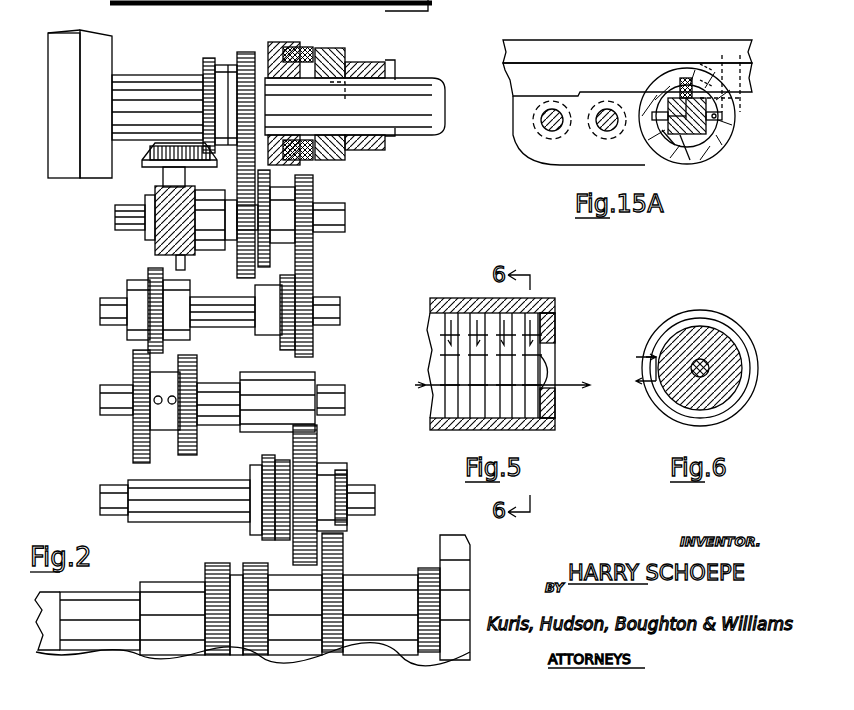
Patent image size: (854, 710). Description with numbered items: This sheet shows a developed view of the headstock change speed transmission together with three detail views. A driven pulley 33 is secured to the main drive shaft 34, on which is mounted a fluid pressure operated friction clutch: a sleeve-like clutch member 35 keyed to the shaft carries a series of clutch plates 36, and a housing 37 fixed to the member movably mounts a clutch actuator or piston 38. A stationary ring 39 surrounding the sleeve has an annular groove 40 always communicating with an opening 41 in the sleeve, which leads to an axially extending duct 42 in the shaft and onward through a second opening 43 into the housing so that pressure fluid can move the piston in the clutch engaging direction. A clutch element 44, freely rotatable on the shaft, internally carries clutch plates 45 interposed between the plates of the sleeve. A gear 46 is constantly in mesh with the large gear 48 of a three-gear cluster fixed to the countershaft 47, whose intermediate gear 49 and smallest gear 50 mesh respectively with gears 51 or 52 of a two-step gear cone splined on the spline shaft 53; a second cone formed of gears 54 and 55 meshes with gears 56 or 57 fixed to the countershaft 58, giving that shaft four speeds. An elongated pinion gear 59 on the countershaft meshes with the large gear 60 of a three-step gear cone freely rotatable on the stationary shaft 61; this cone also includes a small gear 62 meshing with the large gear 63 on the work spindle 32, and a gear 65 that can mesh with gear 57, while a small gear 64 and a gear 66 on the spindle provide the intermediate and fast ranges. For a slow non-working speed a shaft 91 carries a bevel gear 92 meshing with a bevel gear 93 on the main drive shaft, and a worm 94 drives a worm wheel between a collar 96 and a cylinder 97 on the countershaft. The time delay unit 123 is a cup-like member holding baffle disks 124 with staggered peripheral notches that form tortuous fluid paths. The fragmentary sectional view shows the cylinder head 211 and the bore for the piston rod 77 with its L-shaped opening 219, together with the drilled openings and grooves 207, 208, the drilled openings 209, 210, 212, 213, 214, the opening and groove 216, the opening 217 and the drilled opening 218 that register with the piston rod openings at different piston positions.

In FIG. 2, the work spindle 32 is at (380, 590).
In FIG. 2, the pulley 33 is at (98, 62).
In FIG. 2, the main drive shaft 34 is at (130, 82).
In FIG. 2, the sleeve-like clutch member 35 is at (298, 76).
In FIG. 2, the clutch plates 36 is at (300, 48).
In FIG. 2, the housing 37 is at (340, 160).
In FIG. 2, the clutch actuator or piston 38 is at (320, 62).
In FIG. 2, the stationary ring 39 is at (380, 62).
In FIG. 2, the annular groove 40 is at (375, 150).
In FIG. 2, the opening 41 is at (360, 70).
In FIG. 2, the axially extending duct 42 is at (346, 100).
In FIG. 2, the second opening 43 is at (330, 86).
In FIG. 2, the clutch element 44 is at (272, 58).
In FIG. 2, the clutch plates 45 is at (315, 176).
In FIG. 2, the gear 46 is at (247, 52).
In FIG. 2, the countershaft 47 is at (335, 225).
In FIG. 2, the large gear 48 is at (242, 262).
In FIG. 2, the intermediate gear 49 is at (264, 192).
In FIG. 2, the smallest gear 50 is at (313, 205).
In FIG. 2, the gear 51 is at (285, 345).
In FIG. 2, the gear 52 is at (315, 338).
In FIG. 2, the spline shaft 53 is at (335, 305).
In FIG. 2, the gear 54 is at (130, 335).
In FIG. 2, the gear 55 is at (150, 275).
In FIG. 2, the gear 56 is at (135, 440).
In FIG. 2, the gear 57 is at (192, 445).
In FIG. 2, the countershaft 58 is at (330, 385).
In FIG. 2, the pinion gear 59 is at (285, 418).
In FIG. 2, the large gear 60 is at (318, 450).
In FIG. 2, the stationary shaft 61 is at (360, 482).
In FIG. 2, the small gear 62 is at (340, 472).
In FIG. 2, the large gear 63 is at (335, 565).
In FIG. 2, the small gear 64 is at (258, 590).
In FIG. 2, the gear 65 is at (268, 545).
In FIG. 2, the gear 66 is at (210, 568).
In FIG. 15A, the piston rod 77 is at (700, 150).
In FIG. 2, the shaft 91 is at (170, 182).
In FIG. 2, the bevel gear 92 is at (146, 160).
In FIG. 2, the bevel gear 93 is at (207, 68).
In FIG. 2, the worm 94 is at (165, 232).
In FIG. 2, the collar 96 is at (120, 220).
In FIG. 2, the housing or cylinder 97 is at (212, 200).
In FIG. 5, the time delay unit 123 is at (450, 300).
In FIG. 6, the time delay unit 123 is at (728, 314).
In FIG. 5, the baffle disks 124 is at (458, 422).
In FIG. 6, the baffle disks 124 is at (722, 358).
In FIG. 15A, the drilled opening and groove 207 is at (700, 60).
In FIG. 15A, the drilled opening and groove 208 is at (745, 60).
In FIG. 15A, the drilled opening 209 is at (722, 50).
In FIG. 15A, the drilled opening 210 is at (745, 98).
In FIG. 15A, the cylinder head 211 is at (698, 136).
In FIG. 15A, the drilled opening 212 is at (745, 82).
In FIG. 15A, the drilled opening 213 is at (730, 120).
In FIG. 15A, the drilled opening 214 is at (685, 90).
In FIG. 15A, the opening and groove 216 is at (652, 112).
In FIG. 15A, the opening 217 is at (660, 125).
In FIG. 15A, the drilled opening 218 is at (658, 154).
In FIG. 15A, the L-shaped opening 219 is at (660, 164).